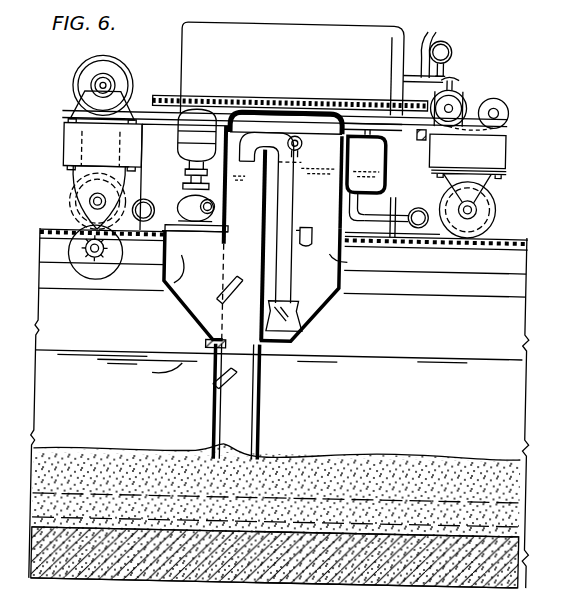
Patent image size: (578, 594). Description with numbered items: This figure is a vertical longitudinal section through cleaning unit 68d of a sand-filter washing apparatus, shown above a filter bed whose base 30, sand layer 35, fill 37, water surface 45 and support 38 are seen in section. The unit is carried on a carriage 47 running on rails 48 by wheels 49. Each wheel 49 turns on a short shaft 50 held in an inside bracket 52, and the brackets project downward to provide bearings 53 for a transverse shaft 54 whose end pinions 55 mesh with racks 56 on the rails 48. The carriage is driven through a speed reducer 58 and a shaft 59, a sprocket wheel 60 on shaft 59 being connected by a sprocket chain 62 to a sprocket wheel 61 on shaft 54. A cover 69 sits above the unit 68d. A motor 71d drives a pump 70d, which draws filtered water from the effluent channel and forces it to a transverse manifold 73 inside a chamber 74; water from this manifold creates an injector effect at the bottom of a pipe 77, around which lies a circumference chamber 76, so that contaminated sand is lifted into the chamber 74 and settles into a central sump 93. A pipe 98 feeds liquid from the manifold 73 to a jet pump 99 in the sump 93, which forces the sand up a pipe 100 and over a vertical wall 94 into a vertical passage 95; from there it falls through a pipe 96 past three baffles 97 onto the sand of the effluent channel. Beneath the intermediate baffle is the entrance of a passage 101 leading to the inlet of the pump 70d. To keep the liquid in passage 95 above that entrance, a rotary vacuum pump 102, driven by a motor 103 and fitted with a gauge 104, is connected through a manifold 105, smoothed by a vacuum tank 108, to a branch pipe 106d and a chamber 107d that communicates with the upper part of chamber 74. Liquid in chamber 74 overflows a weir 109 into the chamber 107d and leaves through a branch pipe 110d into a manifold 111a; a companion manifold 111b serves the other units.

The concrete base slab 30 is at (505, 553).
The sand layer 35 is at (500, 495).
The soil fill 37 is at (505, 393).
The water surface 45 is at (472, 348).
The circumference chamber 76 is at (303, 408).
The rail support 38 is at (515, 295).
The rack 56 is at (50, 236).
The rail 48 is at (510, 245).
The vacuum tank 108 is at (178, 54).
The branch pipe 106d is at (392, 85).
The manifold 105 is at (416, 30).
The gauge 104 is at (448, 44).
The rotary vacuum pump 102 is at (452, 100).
The motor 103 is at (496, 100).
The carriage 47 is at (507, 144).
The speed reducer 58 is at (78, 61).
The sprocket wheel 60 is at (90, 82).
The shaft 59 is at (97, 86).
The sprocket chain 62 is at (62, 136).
The inside bracket 52 is at (82, 214).
The short shaft 50 is at (88, 194).
The wheel 49 is at (90, 200).
The transverse shaft 54 is at (88, 266).
The bearing 53 is at (86, 252).
The pinion 55 is at (90, 247).
The sprocket wheel 61 is at (75, 290).
The motor 71d is at (200, 106).
The pump 70d is at (179, 196).
The manifold 111b is at (145, 220).
The cover 69 is at (322, 108).
The cleaning unit 68d is at (276, 108).
The manifold 73 is at (296, 130).
The vertical passage 95 is at (284, 203).
The weir 109 is at (348, 164).
The pipe 77 is at (306, 224).
The vertical wall 94 is at (284, 262).
The sump 93 is at (304, 312).
The jet pump 99 is at (292, 316).
The pipe 100 is at (298, 290).
The pipe 98 is at (312, 272).
The chamber 74 is at (343, 254).
The pipe 96 is at (264, 388).
The passage 101 is at (190, 290).
The baffle 97 is at (222, 262).
The chamber 107d is at (382, 166).
The manifold 111a is at (433, 212).
The branch pipe 110d is at (426, 240).